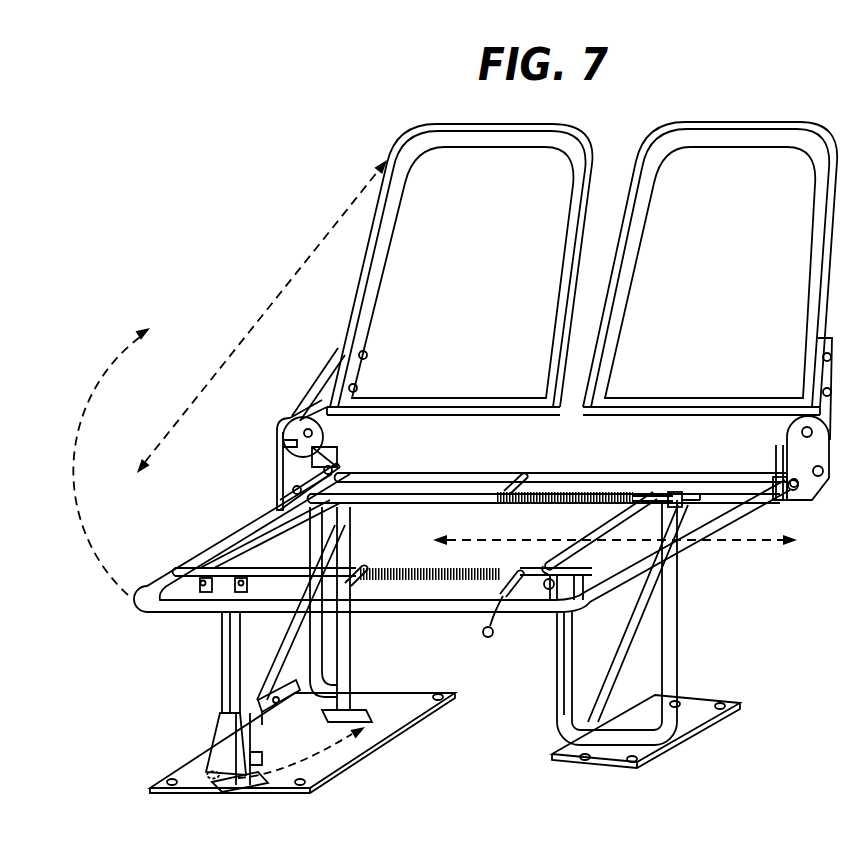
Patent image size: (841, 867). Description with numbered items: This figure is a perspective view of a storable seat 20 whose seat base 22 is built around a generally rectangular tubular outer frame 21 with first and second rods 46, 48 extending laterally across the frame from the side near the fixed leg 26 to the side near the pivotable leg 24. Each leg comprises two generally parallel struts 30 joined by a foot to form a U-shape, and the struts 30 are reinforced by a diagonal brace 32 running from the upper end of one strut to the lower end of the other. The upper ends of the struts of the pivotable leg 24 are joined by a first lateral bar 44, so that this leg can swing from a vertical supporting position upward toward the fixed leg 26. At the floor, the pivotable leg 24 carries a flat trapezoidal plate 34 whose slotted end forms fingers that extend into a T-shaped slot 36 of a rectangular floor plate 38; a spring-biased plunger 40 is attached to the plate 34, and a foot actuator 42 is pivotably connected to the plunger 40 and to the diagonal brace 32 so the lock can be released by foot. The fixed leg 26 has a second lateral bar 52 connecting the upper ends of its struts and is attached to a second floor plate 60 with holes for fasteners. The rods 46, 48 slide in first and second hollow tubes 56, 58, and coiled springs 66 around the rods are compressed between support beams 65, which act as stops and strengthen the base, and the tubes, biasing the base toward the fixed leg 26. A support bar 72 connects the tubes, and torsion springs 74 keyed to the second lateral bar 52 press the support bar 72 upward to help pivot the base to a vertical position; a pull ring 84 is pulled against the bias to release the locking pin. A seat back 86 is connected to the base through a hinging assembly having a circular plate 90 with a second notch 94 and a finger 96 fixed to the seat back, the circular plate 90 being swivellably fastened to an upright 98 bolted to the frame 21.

The storable seat 20 is at (277, 194).
The tubular outer frame 21 is at (745, 508).
The seat base 22 is at (119, 619).
The pivotable leg 24 is at (198, 667).
The fixed leg 26 is at (702, 623).
The struts 30 is at (222, 640).
The diagonal brace 32 is at (281, 653).
The trapezoidal plate 34 is at (220, 737).
The T-shaped slot 36 is at (351, 712).
The floor plate 38 is at (403, 711).
The spring-biased plunger 40 is at (258, 758).
The foot actuator 42 is at (291, 703).
The first lateral bar 44 is at (251, 545).
The first rod 46 is at (193, 571).
The second rod 48 is at (433, 499).
The second lateral bar 52 is at (648, 505).
The first tube 56 is at (534, 573).
The second tube 58 is at (680, 496).
The second floor plate 60 is at (677, 731).
The support beams 65 is at (510, 482).
The coiled springs 66 is at (588, 492).
The support bar 72 is at (585, 548).
The torsion springs 74 is at (560, 560).
The pull ring 84 is at (488, 636).
The seat back 86 is at (378, 249).
The circular plate 90 is at (293, 427).
The second notch 94 is at (279, 444).
The finger 96 is at (323, 387).
The upright 98 is at (285, 474).